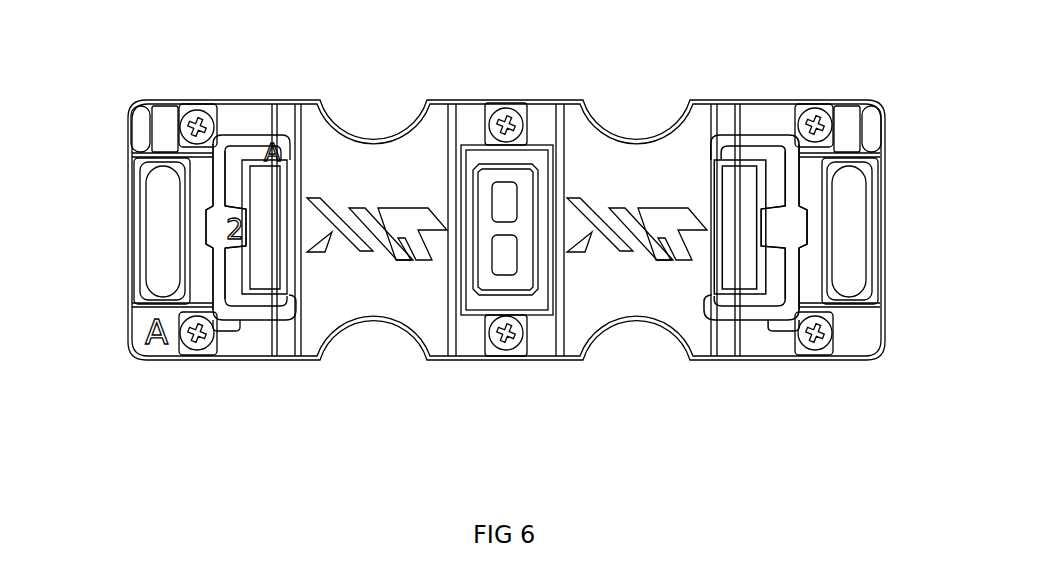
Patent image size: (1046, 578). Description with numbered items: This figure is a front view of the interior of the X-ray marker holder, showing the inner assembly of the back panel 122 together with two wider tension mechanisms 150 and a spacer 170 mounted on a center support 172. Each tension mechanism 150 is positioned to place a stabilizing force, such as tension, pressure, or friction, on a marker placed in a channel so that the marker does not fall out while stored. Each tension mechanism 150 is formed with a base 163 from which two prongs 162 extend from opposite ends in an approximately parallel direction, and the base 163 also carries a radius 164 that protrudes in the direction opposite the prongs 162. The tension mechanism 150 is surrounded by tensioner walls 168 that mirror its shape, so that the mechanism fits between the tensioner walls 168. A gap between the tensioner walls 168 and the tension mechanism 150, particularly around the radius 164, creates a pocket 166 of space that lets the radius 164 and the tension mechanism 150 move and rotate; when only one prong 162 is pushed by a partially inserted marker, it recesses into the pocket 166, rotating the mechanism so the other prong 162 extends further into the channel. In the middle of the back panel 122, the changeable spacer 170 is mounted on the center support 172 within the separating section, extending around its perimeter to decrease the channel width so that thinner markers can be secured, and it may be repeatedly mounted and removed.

The mounting plate 122 is at (436, 97).
The tension mechanism 150 is at (261, 144).
The prong 162 is at (282, 164).
The base 163 is at (225, 270).
The radius 164 is at (219, 211).
The pocket 166 is at (196, 227).
The tensioner walls 168 is at (263, 283).
The spacer 170 is at (489, 145).
The center support 172 is at (527, 201).